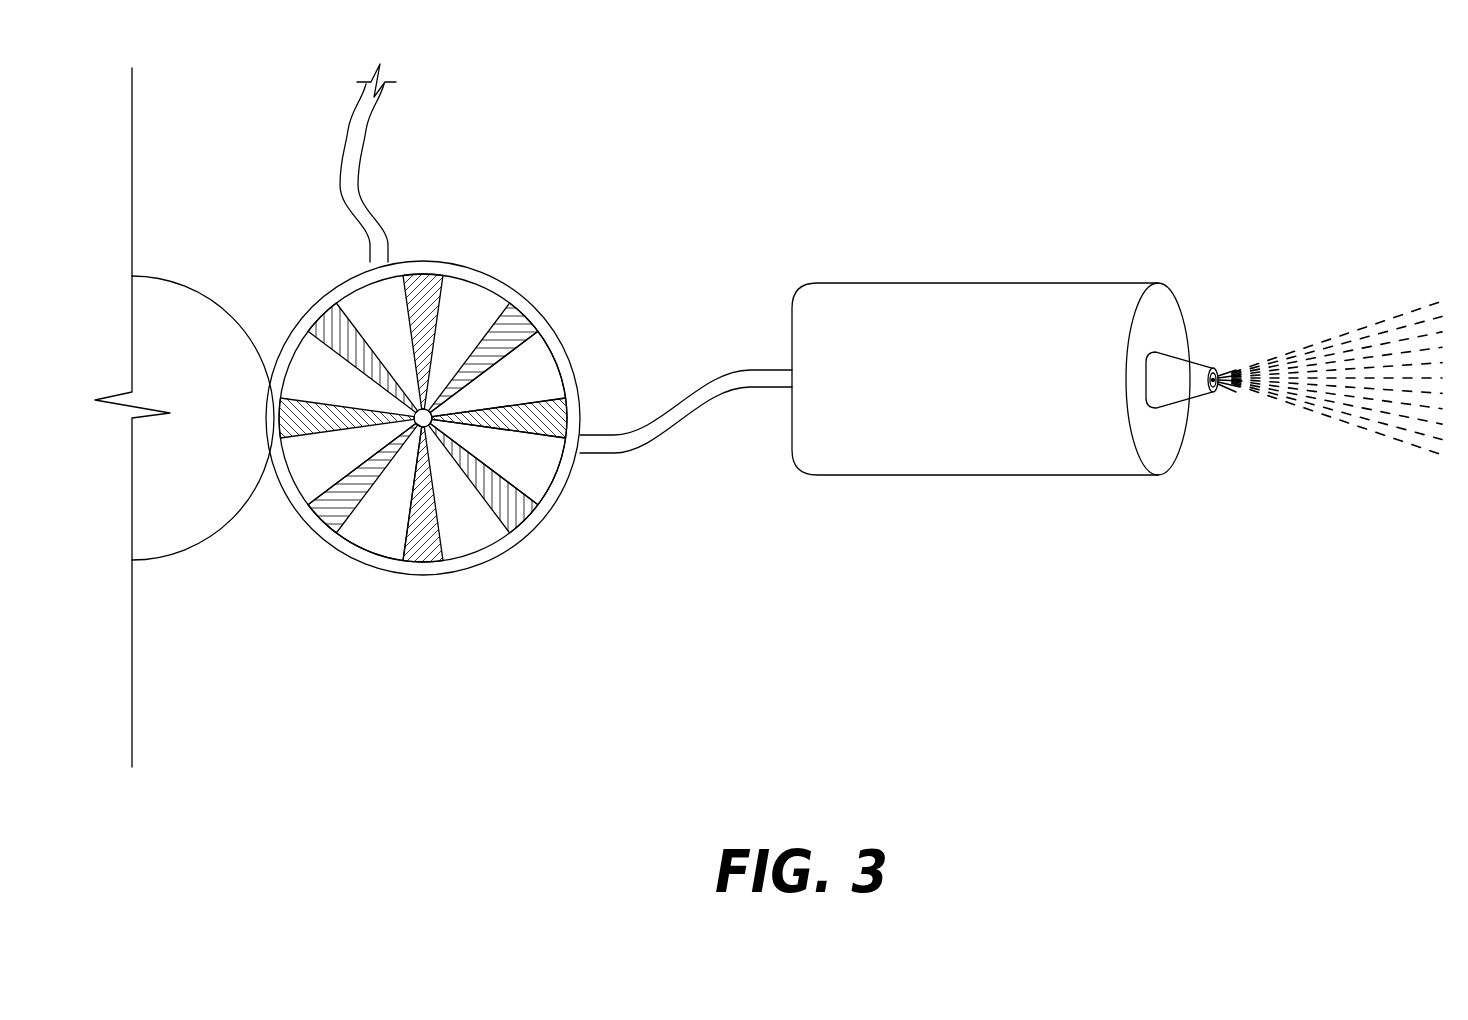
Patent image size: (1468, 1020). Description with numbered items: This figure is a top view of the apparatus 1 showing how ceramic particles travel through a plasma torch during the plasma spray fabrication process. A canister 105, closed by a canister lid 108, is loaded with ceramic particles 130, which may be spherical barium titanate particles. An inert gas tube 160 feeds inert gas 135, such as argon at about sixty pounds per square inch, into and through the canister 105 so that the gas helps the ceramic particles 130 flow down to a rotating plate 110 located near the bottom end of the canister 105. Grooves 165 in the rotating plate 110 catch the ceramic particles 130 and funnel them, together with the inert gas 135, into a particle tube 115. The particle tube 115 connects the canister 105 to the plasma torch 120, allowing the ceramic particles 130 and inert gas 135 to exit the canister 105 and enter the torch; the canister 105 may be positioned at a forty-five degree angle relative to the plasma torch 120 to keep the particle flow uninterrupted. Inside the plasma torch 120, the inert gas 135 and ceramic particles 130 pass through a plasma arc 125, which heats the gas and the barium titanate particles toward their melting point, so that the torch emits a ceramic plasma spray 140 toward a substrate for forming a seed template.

The apparatus 1 is at (664, 96).
The canister 105 is at (430, 580).
The canister lid 108 is at (187, 317).
The rotating plate 110 is at (368, 550).
The particle tube 115 is at (757, 378).
The plasma torch 120 is at (965, 455).
The plasma arc 125 is at (1210, 368).
The ceramic particles 130 is at (542, 477).
The inert gas 135 is at (538, 368).
The ceramic plasma spray 140 is at (1265, 398).
The inert gas tube 160 is at (347, 165).
The grooves 165 is at (513, 322).